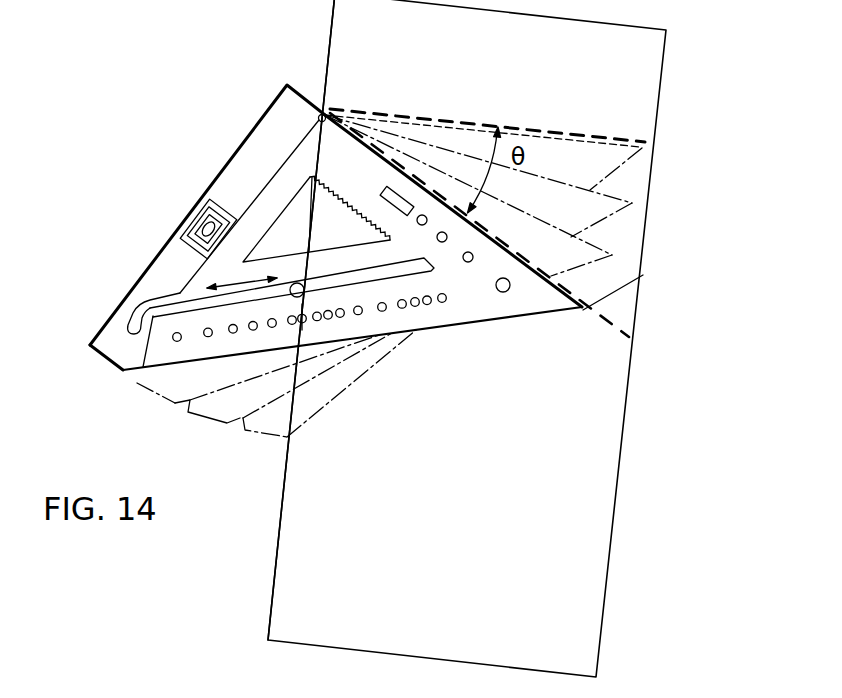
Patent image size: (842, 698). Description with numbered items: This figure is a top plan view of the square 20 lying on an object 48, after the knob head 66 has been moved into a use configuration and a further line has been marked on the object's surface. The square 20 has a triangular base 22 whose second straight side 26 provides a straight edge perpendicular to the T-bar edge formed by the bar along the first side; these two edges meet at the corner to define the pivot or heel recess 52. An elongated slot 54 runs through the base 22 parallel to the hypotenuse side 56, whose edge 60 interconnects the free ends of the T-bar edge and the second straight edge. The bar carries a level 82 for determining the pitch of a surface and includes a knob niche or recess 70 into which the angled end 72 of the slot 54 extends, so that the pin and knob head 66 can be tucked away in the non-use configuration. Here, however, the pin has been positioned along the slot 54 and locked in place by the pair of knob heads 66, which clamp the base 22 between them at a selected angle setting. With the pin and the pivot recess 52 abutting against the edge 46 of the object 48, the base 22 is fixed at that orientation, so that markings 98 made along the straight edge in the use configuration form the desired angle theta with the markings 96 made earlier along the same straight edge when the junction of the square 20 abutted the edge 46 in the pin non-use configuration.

The square 20 is at (78, 229).
The triangular base 22 is at (453, 232).
The second straight side 26 is at (479, 231).
The edge of object 46 is at (275, 320).
The object 48 is at (477, 524).
The pivot or heel recess 52 is at (341, 145).
The elongated slot 54 is at (292, 281).
The hypotenuse side 56 is at (466, 353).
The edge of hypotenuse side 60 is at (308, 381).
The knob head 66 is at (318, 276).
The knob niche or recess 70 is at (114, 305).
The angled end of slot 72 is at (125, 375).
The level 82 is at (184, 220).
The markings 96 is at (487, 111).
The markings 98 is at (643, 275).